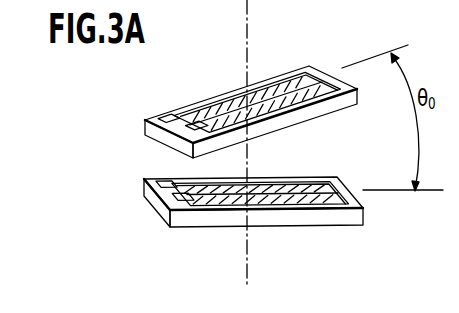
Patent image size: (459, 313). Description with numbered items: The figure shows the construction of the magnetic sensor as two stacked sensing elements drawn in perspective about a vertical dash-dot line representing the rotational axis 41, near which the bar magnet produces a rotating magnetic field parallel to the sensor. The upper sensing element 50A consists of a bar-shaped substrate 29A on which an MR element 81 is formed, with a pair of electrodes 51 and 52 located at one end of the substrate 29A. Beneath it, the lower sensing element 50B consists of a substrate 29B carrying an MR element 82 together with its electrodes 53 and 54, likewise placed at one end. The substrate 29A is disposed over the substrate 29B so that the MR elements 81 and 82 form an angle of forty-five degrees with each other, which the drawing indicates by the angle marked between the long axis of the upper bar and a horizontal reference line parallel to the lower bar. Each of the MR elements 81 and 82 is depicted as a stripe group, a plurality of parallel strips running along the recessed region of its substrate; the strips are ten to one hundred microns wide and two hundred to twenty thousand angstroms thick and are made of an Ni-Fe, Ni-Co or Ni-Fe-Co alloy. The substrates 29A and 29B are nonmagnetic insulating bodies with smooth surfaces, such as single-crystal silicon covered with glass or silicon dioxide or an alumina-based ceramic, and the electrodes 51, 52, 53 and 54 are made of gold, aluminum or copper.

The rotational axis 41 is at (247, 14).
The sensing element 50A is at (226, 93).
The sensing element 50B is at (234, 215).
The substrate 29A is at (285, 122).
The substrate 29B is at (312, 218).
The MR element 81 is at (273, 83).
The MR element 82 is at (313, 185).
The electrode 51 is at (157, 121).
The electrode 52 is at (182, 136).
The electrode 53 is at (152, 190).
The electrode 54 is at (163, 201).